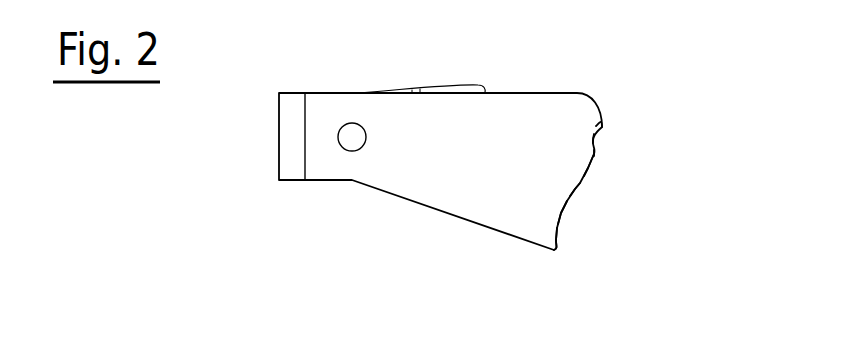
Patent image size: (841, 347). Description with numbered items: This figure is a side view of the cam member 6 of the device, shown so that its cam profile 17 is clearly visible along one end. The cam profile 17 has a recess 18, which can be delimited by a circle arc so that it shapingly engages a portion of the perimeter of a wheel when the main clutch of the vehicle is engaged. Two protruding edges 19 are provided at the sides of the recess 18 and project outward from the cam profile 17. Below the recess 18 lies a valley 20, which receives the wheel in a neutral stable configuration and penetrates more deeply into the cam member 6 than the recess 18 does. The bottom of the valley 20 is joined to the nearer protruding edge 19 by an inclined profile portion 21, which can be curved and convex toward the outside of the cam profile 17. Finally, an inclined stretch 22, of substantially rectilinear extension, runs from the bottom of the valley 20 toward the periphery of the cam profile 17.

The cam member 6 is at (397, 135).
The cam profile 17 is at (588, 168).
The recess 18 is at (594, 141).
The protruding edges 19 is at (603, 128).
The valley 20 is at (562, 210).
The inclined profile portion 21 is at (577, 190).
The inclined stretch 22 is at (562, 243).